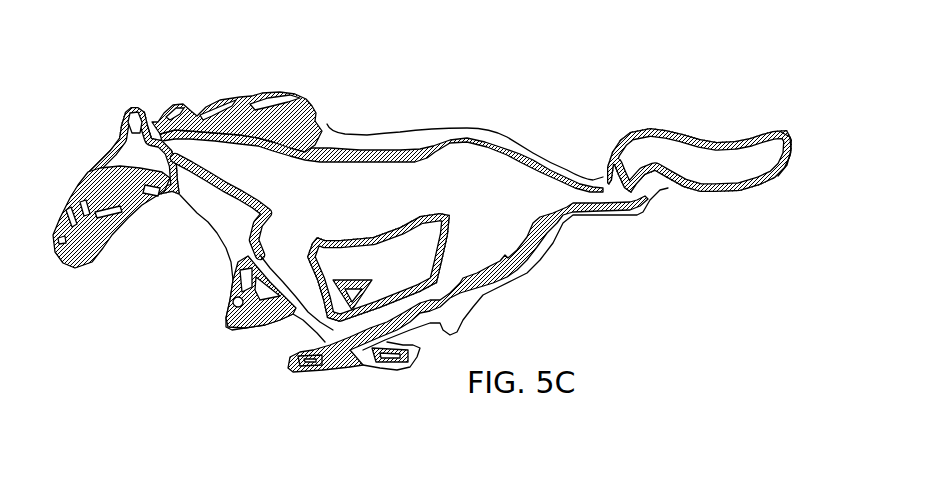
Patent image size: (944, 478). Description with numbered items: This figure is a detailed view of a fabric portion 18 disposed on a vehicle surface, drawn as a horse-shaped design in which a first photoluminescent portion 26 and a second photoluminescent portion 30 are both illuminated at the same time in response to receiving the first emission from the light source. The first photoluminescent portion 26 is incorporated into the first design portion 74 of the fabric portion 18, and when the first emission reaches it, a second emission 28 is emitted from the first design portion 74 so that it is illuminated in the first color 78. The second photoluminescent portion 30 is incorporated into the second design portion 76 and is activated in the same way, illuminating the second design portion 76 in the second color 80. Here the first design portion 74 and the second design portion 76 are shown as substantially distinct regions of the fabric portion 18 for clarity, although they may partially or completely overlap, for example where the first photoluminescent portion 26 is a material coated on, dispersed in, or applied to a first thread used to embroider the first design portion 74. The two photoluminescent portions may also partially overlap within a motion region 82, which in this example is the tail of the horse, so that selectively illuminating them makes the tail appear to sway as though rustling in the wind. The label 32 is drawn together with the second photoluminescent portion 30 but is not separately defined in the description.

The fabric portion 18 is at (440, 211).
The first photoluminescent portion 26 is at (381, 135).
The second emission 28 is at (392, 140).
The second photoluminescent portion 30 is at (474, 156).
The outer wall edge 32 is at (207, 104).
The first design portion 74 is at (478, 280).
The second design portion 76 is at (699, 194).
The first color 78 is at (547, 252).
The second color 80 is at (717, 190).
The motion region 82 is at (783, 130).